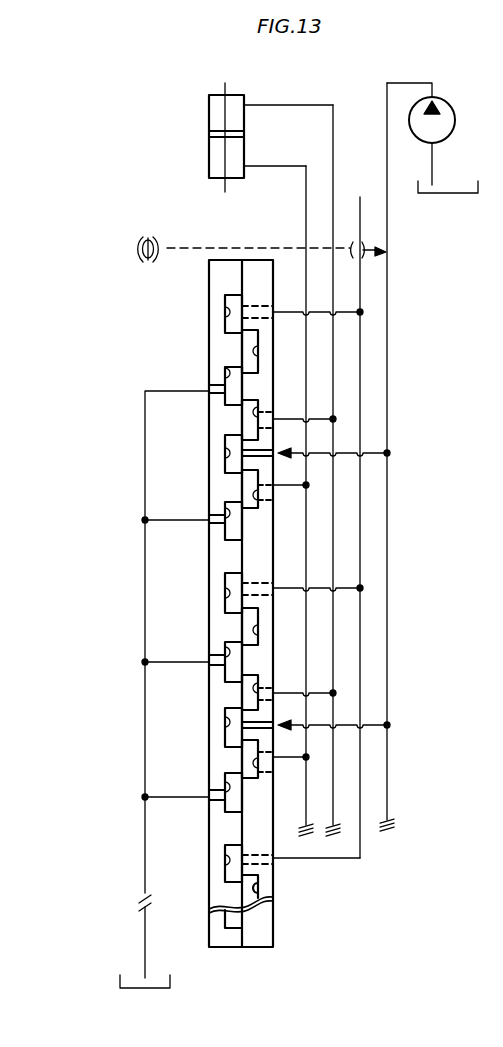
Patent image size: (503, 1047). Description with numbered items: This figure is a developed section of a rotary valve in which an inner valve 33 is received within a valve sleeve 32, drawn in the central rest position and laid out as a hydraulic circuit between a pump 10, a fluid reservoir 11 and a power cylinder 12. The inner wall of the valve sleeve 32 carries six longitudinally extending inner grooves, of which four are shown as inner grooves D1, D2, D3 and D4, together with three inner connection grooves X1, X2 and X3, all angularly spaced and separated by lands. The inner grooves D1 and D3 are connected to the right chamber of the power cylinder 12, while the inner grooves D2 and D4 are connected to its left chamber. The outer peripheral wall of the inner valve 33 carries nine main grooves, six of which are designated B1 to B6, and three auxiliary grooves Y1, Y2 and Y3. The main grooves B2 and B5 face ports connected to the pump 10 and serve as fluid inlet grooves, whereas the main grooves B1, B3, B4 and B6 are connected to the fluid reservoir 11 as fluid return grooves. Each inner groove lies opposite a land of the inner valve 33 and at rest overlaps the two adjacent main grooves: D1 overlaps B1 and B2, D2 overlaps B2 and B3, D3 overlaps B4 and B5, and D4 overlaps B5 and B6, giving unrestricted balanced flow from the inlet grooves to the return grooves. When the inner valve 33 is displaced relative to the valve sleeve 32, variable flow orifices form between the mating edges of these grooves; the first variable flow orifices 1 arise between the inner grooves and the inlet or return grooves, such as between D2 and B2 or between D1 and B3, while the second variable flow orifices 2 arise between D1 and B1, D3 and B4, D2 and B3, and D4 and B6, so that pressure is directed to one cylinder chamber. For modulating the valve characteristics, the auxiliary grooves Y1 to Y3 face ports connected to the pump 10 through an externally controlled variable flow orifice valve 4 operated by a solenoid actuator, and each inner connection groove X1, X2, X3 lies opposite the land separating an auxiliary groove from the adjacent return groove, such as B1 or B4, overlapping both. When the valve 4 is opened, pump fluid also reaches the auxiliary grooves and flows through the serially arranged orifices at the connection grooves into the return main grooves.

The tank 1 is at (478, 181).
The hydraulic circuit 2 is at (500, 776).
The externally controlled variable flow orifice valve 4 is at (376, 243).
The pump 10 is at (455, 114).
The fluid reservoir 11 is at (145, 1000).
The power cylinder 12 is at (204, 139).
The valve sleeve 32 is at (263, 947).
The inner valve 33 is at (222, 947).
The auxiliary groove Y1 is at (225, 312).
The auxiliary groove Y2 is at (225, 593).
The auxiliary groove Y3 is at (225, 860).
The inner connection groove X1 is at (258, 351).
The inner connection groove X2 is at (258, 630).
The inner connection groove X3 is at (258, 888).
The main groove B1 is at (228, 371).
The main groove B2 is at (225, 450).
The main groove B3 is at (228, 511).
The main groove B4 is at (228, 651).
The main groove B5 is at (228, 721).
The main groove B6 is at (228, 786).
The inner groove D1 is at (258, 409).
The inner groove D2 is at (258, 495).
The inner groove D3 is at (258, 686).
The inner groove D4 is at (258, 766).